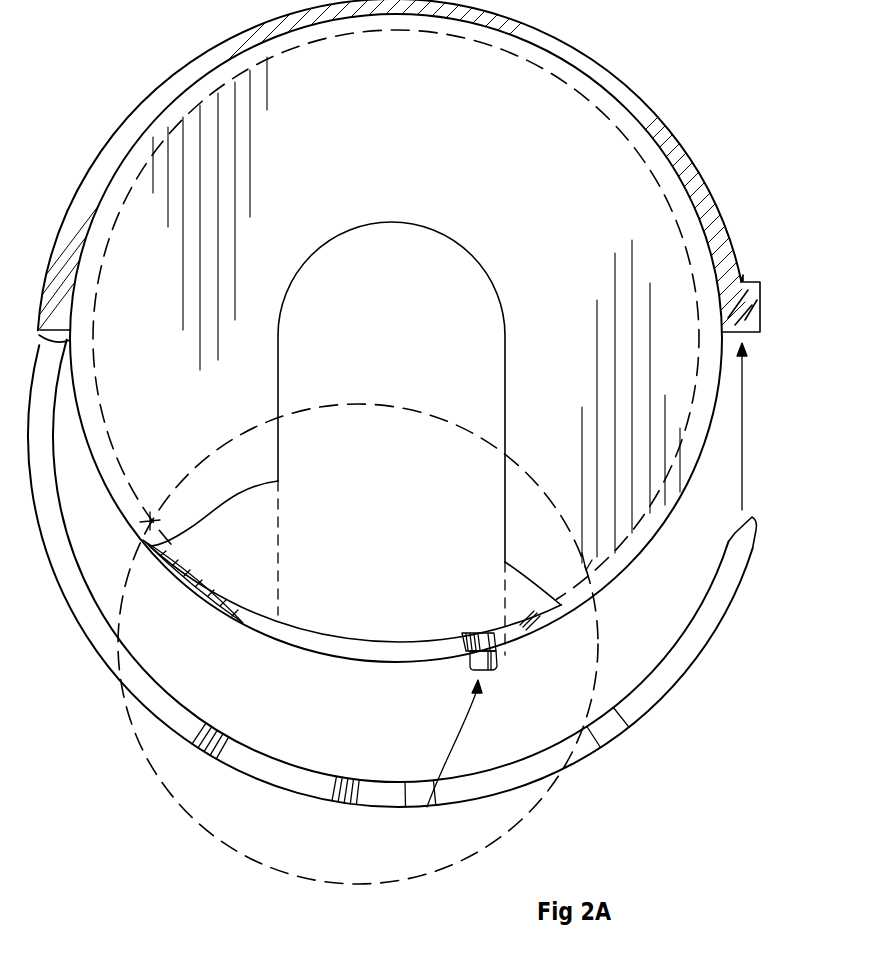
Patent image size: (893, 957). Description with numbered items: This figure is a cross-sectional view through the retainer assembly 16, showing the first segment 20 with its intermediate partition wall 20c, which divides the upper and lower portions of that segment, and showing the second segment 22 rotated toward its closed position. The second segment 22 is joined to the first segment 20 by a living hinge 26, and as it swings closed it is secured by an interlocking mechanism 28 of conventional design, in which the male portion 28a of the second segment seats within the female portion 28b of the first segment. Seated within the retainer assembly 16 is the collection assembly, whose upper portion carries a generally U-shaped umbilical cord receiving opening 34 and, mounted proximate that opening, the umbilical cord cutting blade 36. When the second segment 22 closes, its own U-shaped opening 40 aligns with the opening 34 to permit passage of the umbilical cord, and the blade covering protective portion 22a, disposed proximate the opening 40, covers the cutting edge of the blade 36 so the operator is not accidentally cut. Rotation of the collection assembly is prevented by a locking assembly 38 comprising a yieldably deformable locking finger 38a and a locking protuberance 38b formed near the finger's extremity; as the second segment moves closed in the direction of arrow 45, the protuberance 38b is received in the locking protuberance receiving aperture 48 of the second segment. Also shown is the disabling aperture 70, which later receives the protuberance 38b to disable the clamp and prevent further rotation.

The retainer assembly 16 is at (548, 618).
The first segment 20 is at (187, 72).
The intermediate partition wall 20c is at (402, 128).
The second segment 22 is at (698, 665).
The blade covering protective portion 22a is at (183, 724).
The living hinge 26 is at (72, 330).
The interlocking mechanism 28 is at (758, 513).
The male portion 28a is at (755, 547).
The female portion 28b is at (748, 283).
The umbilical cord receiving opening 34 is at (356, 660).
The umbilical cord cutting blade 36 is at (190, 590).
The locking assembly 38 is at (484, 638).
The locking finger 38a is at (460, 650).
The locking protuberance 38b is at (497, 663).
The U-shaped opening 40 is at (338, 790).
The arrow 45 is at (462, 733).
The locking protuberance receiving aperture 48 is at (423, 798).
The disabling aperture 70 is at (610, 740).